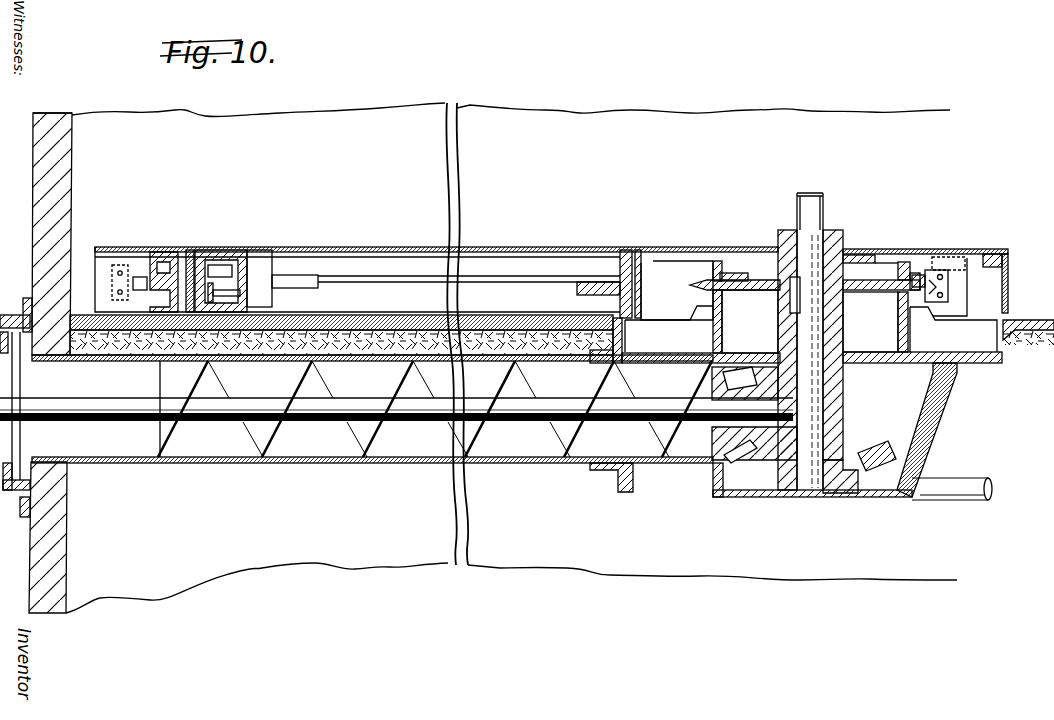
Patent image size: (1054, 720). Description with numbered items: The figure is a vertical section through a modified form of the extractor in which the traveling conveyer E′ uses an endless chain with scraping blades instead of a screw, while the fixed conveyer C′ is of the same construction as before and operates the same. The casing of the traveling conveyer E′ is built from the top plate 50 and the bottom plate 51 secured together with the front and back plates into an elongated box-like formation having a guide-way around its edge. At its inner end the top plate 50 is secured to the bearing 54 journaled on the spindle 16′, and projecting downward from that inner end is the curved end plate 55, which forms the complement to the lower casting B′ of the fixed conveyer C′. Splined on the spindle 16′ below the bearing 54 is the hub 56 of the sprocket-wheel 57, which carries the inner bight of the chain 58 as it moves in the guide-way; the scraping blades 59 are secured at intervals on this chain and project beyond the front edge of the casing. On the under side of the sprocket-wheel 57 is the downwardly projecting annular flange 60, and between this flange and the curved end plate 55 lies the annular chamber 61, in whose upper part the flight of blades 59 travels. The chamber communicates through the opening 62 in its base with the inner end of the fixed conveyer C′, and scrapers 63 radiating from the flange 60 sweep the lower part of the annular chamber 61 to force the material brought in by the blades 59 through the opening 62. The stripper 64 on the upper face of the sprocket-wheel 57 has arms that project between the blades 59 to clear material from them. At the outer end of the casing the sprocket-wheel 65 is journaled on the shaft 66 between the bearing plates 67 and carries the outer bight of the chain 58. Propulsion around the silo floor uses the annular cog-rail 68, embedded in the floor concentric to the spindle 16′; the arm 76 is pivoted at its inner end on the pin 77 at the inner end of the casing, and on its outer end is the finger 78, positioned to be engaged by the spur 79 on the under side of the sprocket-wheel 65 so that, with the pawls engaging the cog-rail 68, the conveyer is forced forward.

The top plate 50 is at (496, 249).
The bottom plate 51 is at (494, 318).
The bearing 54 is at (838, 232).
The curved end plate 55 is at (1005, 283).
The hub 56 is at (843, 307).
The sprocket-wheel 57 is at (863, 280).
The chain 58 is at (133, 268).
The scraping blades 59 is at (958, 290).
The annular flange 60 is at (723, 316).
The annular chamber 61 is at (1002, 239).
The opening 62 is at (637, 360).
The scrapers 63 is at (811, 329).
The stripper 64 is at (709, 262).
The sprocket-wheel 65 is at (216, 290).
The shaft 66 is at (186, 250).
The bearing plates 67 is at (153, 273).
The annular cog-rail 68 is at (273, 360).
The arm 76 is at (343, 278).
The pin 77 is at (620, 268).
The finger 78 is at (259, 278).
The spur 79 is at (230, 262).
The spindle 16' is at (843, 341).
The fixed conveyer C' is at (396, 425).
The traveling conveyer E' is at (446, 261).
The lower casting B' is at (932, 430).